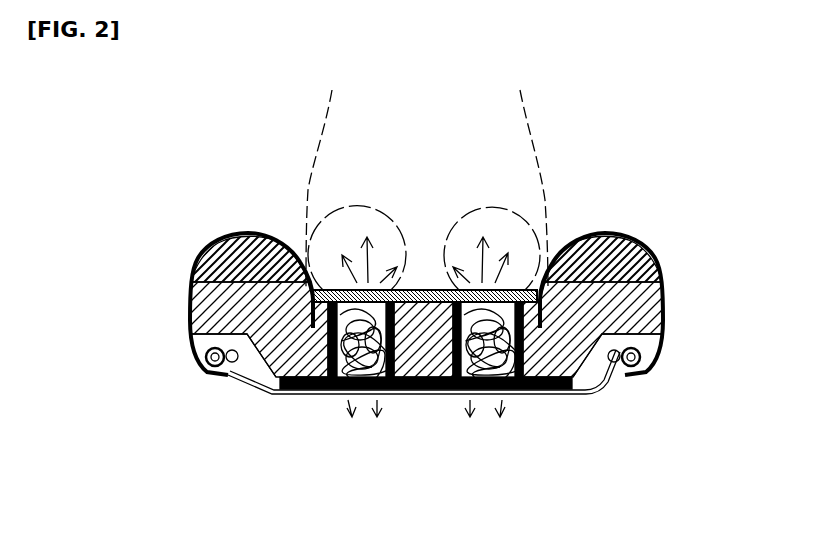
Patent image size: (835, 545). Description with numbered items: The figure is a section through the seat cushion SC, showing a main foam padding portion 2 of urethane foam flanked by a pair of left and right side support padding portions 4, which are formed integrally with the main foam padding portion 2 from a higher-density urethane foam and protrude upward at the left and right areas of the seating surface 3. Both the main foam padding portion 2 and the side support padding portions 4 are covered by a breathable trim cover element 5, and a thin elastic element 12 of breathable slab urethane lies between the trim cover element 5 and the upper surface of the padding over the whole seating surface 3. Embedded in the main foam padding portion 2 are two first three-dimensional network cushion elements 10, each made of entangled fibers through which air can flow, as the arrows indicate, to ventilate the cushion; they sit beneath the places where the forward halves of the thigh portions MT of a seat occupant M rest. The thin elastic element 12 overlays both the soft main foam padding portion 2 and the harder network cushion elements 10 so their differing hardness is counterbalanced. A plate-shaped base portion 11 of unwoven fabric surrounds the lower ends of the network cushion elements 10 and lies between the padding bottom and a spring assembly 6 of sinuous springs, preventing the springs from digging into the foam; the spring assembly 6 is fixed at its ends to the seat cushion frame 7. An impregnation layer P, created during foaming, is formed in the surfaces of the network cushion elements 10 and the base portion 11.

The main foam padding portion 2 is at (665, 320).
The seating surface 3 is at (428, 292).
The side support padding portion 4 is at (212, 245).
The trim cover element 5 is at (378, 228).
The spring assembly 6 is at (278, 394).
The seat cushion frame 7 is at (648, 364).
The first three-dimensional network cushion element 10 is at (338, 393).
The base portion 11 is at (413, 393).
The thin elastic element 12 is at (438, 292).
The seat occupant M is at (515, 130).
The thigh portion MT is at (340, 210).
The impregnation layer P is at (403, 393).
The seat cushion SC is at (650, 240).